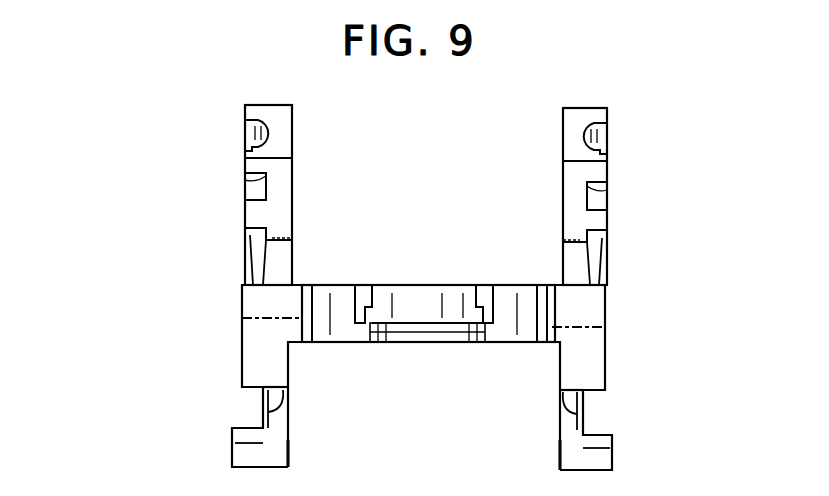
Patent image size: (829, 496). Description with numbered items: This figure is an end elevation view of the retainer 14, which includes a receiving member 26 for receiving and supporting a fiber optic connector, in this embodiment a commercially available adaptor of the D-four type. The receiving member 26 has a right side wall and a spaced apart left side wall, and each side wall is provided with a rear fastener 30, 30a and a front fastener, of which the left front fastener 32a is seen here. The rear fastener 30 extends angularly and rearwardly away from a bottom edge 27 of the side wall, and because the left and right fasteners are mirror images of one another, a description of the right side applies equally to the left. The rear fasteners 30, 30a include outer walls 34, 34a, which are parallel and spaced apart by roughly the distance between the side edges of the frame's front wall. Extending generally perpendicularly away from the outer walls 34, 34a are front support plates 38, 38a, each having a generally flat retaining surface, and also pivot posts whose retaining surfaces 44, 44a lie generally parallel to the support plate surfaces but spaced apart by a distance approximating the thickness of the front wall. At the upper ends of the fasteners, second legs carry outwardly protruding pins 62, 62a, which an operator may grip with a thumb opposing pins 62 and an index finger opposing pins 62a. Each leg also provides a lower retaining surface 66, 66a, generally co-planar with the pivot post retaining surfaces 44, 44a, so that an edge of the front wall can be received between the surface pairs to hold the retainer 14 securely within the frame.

The retainer 14 is at (122, 181).
The receiving member 26 is at (512, 285).
The bottom edge 27 is at (523, 345).
The rear fastener 30 is at (300, 459).
The rear fastener 30a is at (548, 468).
The front fastener 32a is at (552, 207).
The outer wall 34 is at (287, 402).
The outer wall 34a is at (562, 410).
The front support plate 38 is at (242, 348).
The front support plate 38a is at (606, 350).
The retaining surface 44 is at (235, 437).
The retaining surface 44a is at (608, 437).
The pins 62 is at (245, 114).
The pins 62a is at (607, 119).
The lower retaining surface 66 is at (257, 237).
The lower retaining surface 66a is at (592, 236).